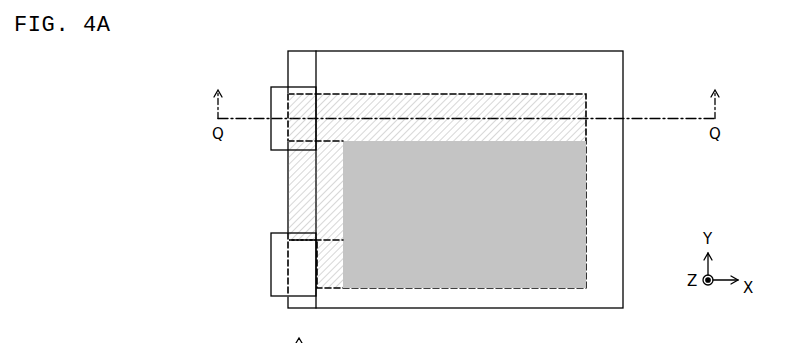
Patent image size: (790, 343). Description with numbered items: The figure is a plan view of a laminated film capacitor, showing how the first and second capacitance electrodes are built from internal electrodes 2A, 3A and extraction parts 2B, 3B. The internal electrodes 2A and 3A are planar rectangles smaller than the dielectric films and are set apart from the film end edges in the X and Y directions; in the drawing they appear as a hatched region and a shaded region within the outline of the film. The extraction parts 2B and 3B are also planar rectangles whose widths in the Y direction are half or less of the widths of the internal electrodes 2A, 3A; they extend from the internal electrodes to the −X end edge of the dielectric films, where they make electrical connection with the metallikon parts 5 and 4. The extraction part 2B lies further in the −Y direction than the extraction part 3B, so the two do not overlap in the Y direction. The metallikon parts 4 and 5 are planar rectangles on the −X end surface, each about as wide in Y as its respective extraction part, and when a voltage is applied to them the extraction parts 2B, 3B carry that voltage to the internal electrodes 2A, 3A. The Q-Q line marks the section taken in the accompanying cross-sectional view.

The internal electrode 2A is at (500, 110).
The extraction part 2B is at (326, 127).
The internal electrode 3A is at (493, 253).
The extraction part 3B is at (329, 265).
The metallikon part 4 is at (274, 247).
The metallikon part 5 is at (278, 101).